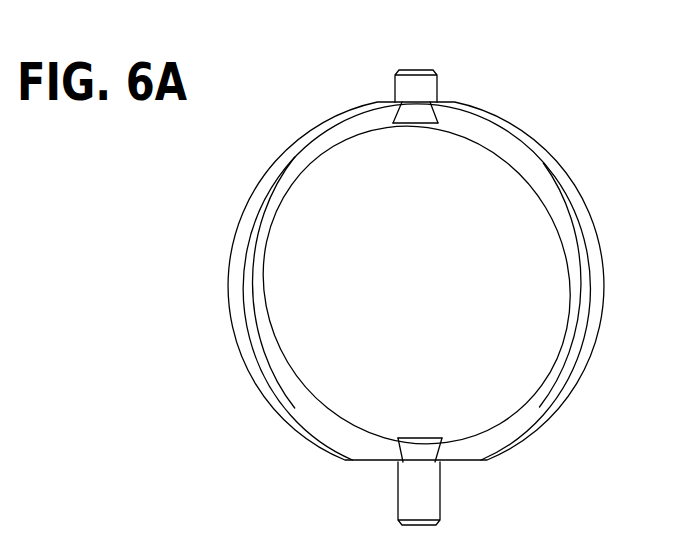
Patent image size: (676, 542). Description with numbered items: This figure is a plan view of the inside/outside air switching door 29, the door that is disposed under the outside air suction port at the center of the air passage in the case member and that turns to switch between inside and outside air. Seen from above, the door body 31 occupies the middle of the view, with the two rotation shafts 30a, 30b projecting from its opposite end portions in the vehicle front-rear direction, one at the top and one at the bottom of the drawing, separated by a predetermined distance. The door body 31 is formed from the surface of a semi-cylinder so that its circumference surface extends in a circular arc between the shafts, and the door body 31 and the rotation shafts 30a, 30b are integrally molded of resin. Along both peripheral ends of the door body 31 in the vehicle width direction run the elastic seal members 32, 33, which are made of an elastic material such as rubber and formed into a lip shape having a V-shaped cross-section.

The inside/outside air switching door 29 is at (258, 167).
The rotation shaft 30a is at (433, 493).
The rotation shaft 30b is at (428, 88).
The door body 31 is at (333, 260).
The elastic seal member 32 is at (587, 348).
The elastic seal member 33 is at (236, 341).